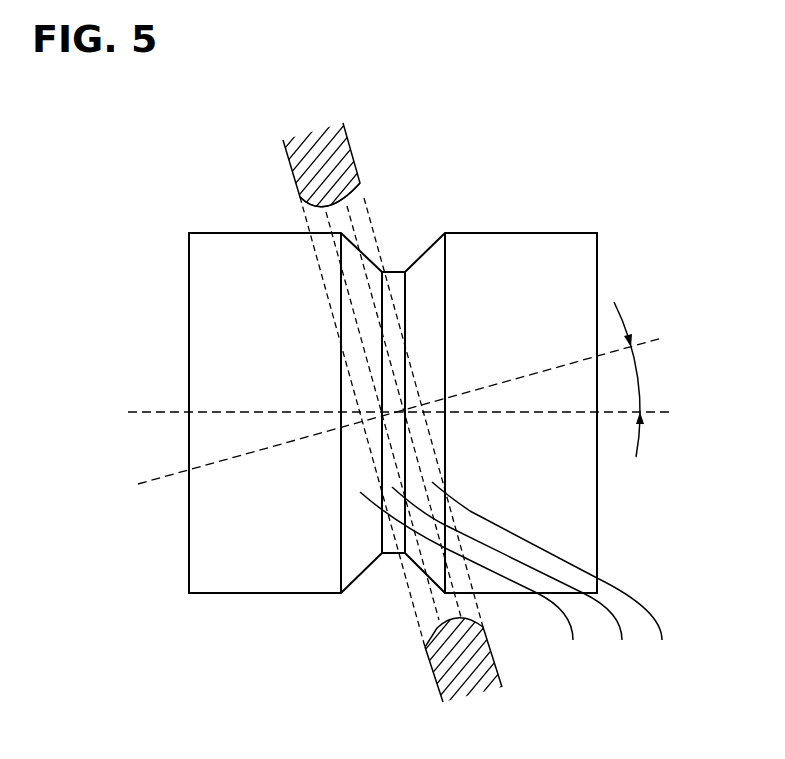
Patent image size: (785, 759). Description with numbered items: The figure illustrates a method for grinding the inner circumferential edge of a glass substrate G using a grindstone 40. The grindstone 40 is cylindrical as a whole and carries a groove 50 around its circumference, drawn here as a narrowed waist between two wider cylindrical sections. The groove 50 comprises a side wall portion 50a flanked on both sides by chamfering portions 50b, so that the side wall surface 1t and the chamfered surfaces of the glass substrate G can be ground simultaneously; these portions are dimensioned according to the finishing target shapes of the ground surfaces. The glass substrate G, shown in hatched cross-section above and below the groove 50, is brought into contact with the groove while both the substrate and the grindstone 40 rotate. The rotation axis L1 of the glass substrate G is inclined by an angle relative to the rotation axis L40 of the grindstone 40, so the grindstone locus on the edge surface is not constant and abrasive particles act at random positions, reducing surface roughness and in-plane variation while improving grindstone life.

The grindstone 40 is at (197, 205).
The glass substrate G is at (288, 165).
The side wall surface 1t is at (342, 220).
The groove 50 is at (525, 598).
The side wall portion 50a is at (553, 666).
The chamfering portions 50b is at (524, 575).
The rotation axis of the glass substrate L1 is at (430, 398).
The rotation axis of the grindstone L40 is at (430, 415).